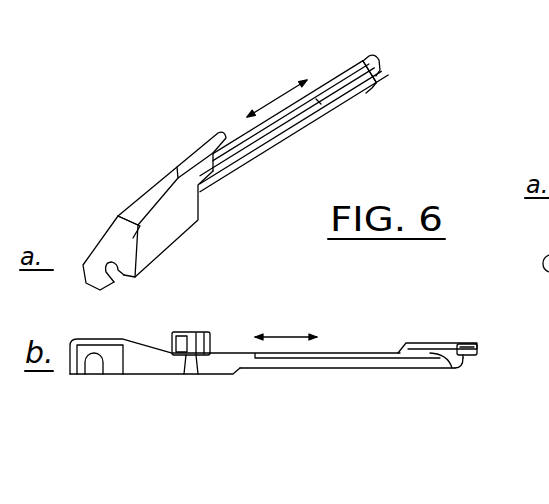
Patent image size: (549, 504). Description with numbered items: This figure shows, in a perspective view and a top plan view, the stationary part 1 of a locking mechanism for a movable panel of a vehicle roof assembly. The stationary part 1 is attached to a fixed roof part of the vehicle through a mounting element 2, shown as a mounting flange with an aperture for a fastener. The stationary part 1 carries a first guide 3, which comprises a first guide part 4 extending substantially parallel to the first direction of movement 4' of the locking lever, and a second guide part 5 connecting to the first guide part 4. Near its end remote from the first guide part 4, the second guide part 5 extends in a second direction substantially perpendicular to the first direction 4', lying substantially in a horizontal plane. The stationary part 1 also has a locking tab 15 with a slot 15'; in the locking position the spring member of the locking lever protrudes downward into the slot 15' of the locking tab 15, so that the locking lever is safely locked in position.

The stationary part 1 is at (172, 218).
The mounting element 2 is at (106, 256).
The first guide 3 is at (424, 342).
The first guide part 4 is at (327, 214).
The first direction of movement 4' is at (282, 198).
The second guide part 5 is at (359, 87).
The locking tab 15 is at (448, 191).
The slot 15' is at (486, 382).